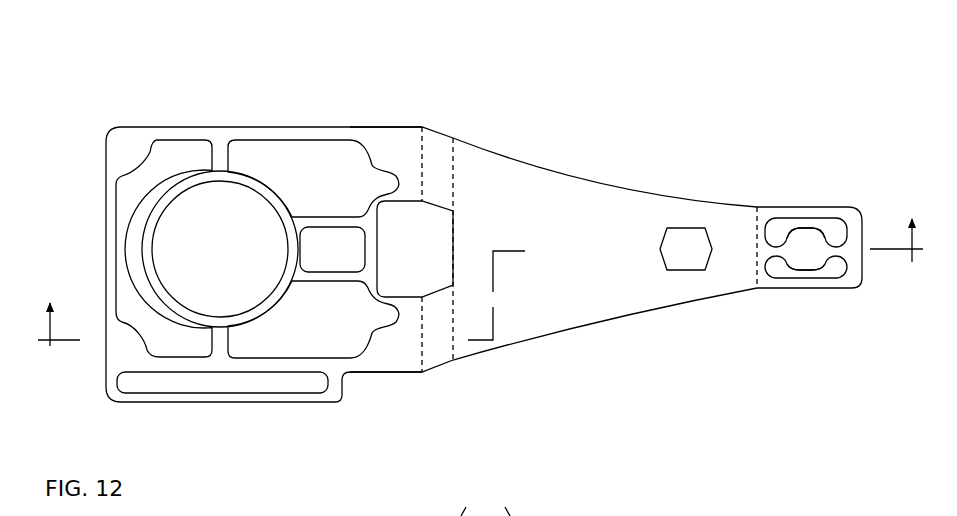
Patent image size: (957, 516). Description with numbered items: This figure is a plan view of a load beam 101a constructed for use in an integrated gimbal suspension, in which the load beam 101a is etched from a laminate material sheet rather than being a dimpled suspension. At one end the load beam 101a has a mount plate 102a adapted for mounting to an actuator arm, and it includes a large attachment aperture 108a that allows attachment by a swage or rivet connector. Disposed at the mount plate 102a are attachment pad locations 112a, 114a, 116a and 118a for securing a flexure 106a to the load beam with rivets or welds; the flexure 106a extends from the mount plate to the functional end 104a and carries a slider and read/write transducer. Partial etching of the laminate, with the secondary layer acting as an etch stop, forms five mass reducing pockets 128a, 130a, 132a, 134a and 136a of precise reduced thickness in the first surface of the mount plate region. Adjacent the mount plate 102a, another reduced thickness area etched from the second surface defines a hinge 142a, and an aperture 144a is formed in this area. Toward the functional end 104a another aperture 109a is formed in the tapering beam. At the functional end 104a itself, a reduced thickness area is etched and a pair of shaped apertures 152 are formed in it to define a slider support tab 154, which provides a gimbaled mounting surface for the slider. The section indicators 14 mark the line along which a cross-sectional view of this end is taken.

The load beam 101a is at (95, 108).
The mount plate 102a is at (259, 110).
The functional end 104a is at (757, 186).
The flexure 106a is at (485, 498).
The attachment aperture 108a is at (163, 210).
The aperture 109a is at (685, 257).
The attachment pad location 112a is at (122, 152).
The attachment pad location 114a is at (392, 142).
The attachment pad location 116a is at (125, 350).
The attachment pad location 118a is at (403, 348).
The mass reducing pocket 128a is at (123, 232).
The mass reducing pocket 130a is at (313, 163).
The mass reducing pocket 132a is at (357, 259).
The mass reducing pocket 134a is at (345, 337).
The mass reducing pocket 136a is at (225, 380).
The hinge 142a is at (437, 153).
The aperture 144a is at (440, 260).
The shaped apertures 152 is at (830, 225).
The slider support tab 154 is at (808, 250).
The section line 14- 14 is at (483, 296).